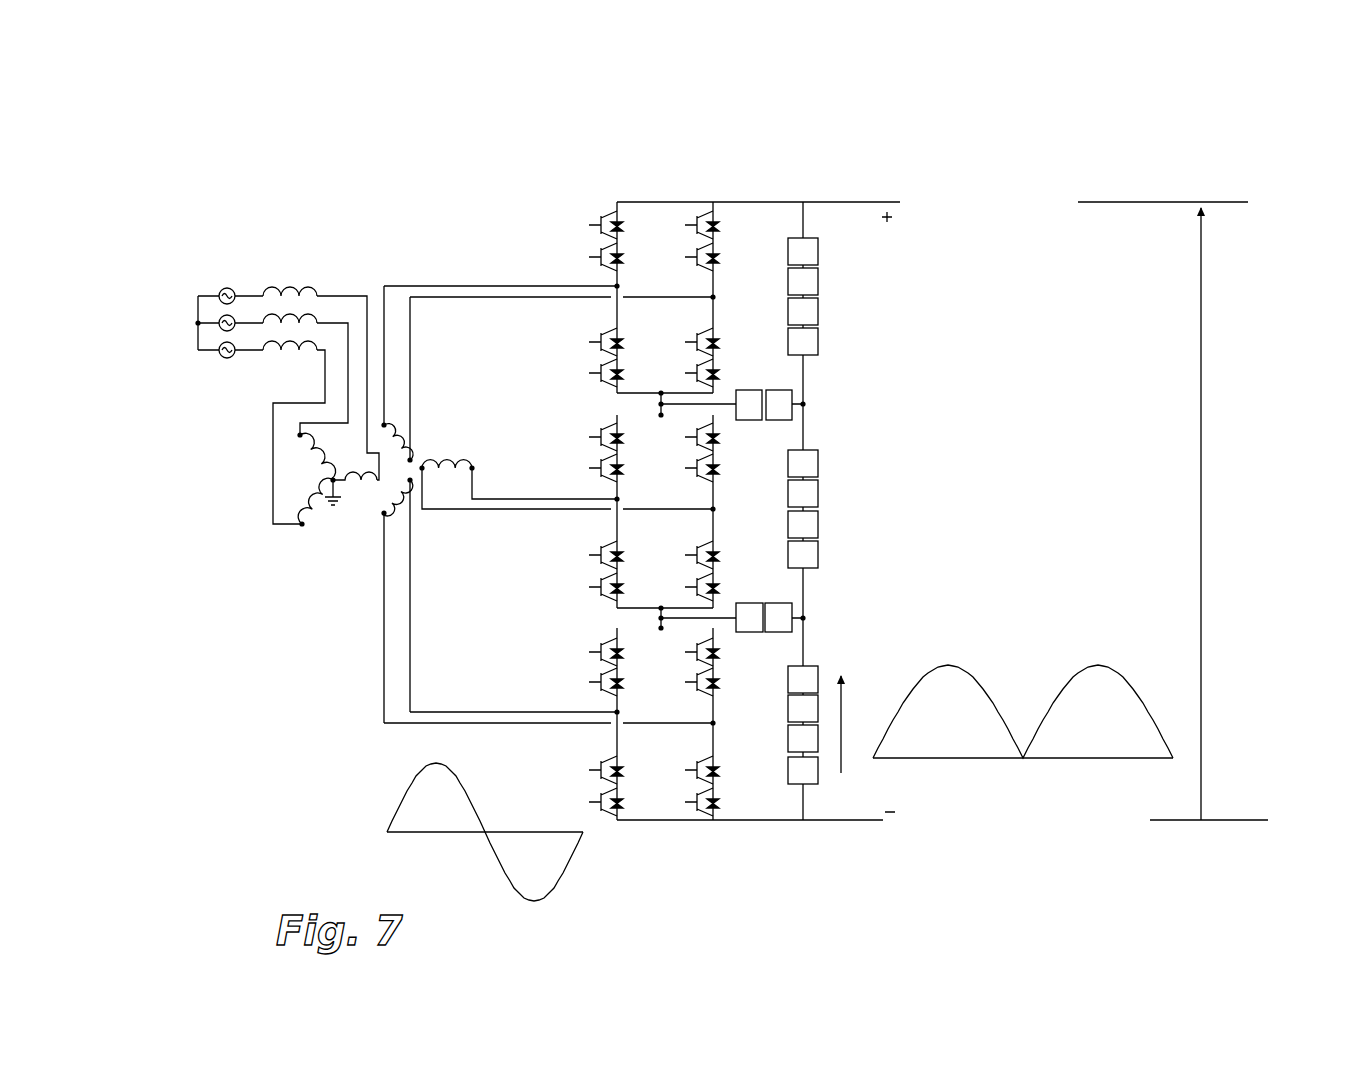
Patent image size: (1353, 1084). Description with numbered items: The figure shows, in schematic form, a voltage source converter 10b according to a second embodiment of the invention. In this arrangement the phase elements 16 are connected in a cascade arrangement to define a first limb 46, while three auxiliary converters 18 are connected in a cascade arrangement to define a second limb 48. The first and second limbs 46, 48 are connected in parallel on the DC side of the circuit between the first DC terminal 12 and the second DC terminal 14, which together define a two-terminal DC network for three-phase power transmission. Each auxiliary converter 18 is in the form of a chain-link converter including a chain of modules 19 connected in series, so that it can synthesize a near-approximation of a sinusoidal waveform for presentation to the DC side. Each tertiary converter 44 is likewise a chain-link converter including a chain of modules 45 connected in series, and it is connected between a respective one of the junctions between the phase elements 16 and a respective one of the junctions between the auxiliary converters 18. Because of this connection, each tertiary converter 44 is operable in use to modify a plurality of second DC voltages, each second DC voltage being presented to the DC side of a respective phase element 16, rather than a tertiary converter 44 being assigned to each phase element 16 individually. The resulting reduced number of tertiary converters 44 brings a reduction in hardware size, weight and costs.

The voltage source converter 10b is at (296, 617).
The first DC terminal 12 is at (815, 202).
The second DC terminal 14 is at (826, 820).
The phase element 16 is at (573, 236).
The auxiliary converter 18 is at (844, 511).
The module 19 is at (800, 342).
The tertiary converter 44 is at (731, 510).
The module 45 is at (780, 404).
The first limb 46 is at (589, 435).
The second limb 48 is at (844, 441).